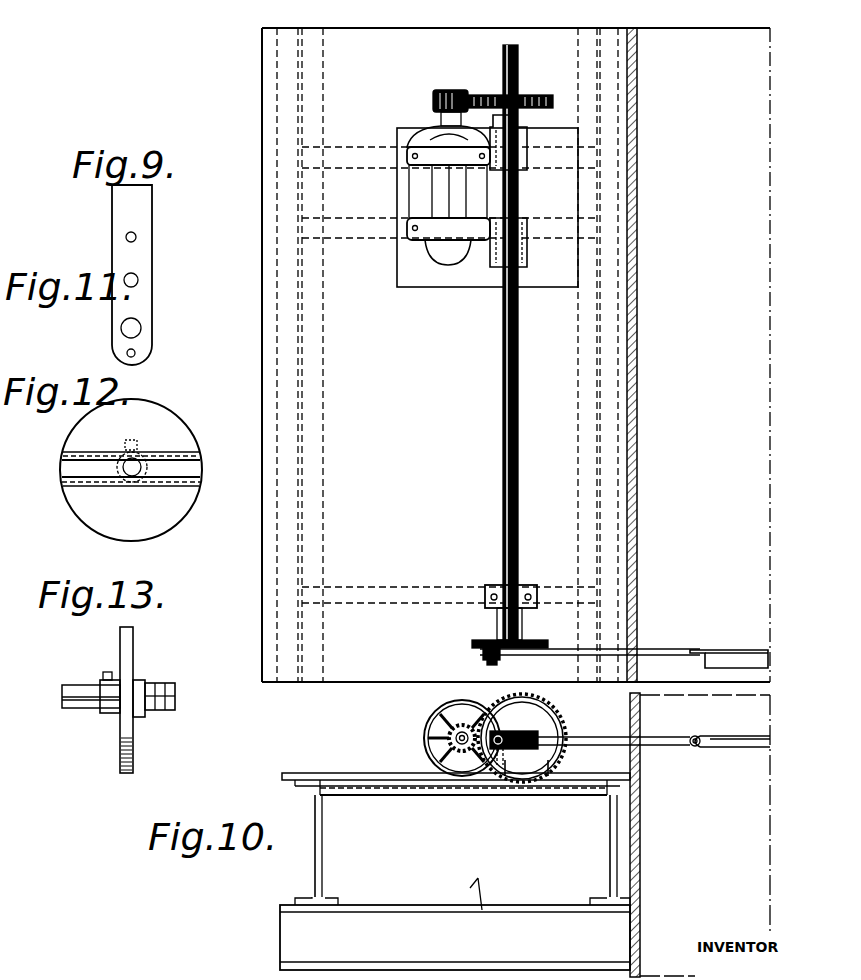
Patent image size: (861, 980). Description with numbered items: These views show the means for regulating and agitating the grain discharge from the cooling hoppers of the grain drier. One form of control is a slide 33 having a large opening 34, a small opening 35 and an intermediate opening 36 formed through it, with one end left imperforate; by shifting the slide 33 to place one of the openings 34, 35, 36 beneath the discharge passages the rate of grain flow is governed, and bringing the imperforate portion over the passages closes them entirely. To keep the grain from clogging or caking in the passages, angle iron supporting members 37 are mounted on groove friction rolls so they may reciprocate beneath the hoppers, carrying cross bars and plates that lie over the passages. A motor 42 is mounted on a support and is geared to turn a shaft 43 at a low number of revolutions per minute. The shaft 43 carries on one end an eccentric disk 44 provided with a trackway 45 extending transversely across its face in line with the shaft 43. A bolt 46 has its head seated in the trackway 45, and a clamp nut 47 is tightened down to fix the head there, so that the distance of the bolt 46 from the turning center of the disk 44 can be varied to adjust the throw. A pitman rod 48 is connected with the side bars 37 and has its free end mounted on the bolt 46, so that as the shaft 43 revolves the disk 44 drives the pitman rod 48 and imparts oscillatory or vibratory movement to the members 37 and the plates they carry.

In FIG. 11, the slide 33 is at (147, 302).
In FIG. 11, the large opening 34 is at (135, 331).
In FIG. 11, the small opening 35 is at (137, 237).
In FIG. 11, the intermediate opening 36 is at (139, 280).
In FIG. 9, the angle iron supporting members 37 is at (733, 652).
In FIG. 10, the angle iron supporting members 37 is at (718, 745).
In FIG. 9, the motor 42 is at (430, 228).
In FIG. 10, the motor 42 is at (437, 740).
In FIG. 9, the shaft 43 is at (503, 362).
In FIG. 13, the shaft 43 is at (72, 715).
In FIG. 10, the eccentric disk 44 is at (515, 766).
In FIG. 12, the eccentric disk 44 is at (80, 508).
In FIG. 10, the trackway 45 is at (540, 768).
In FIG. 12, the trackway 45 is at (200, 470).
In FIG. 13, the trackway 45 is at (136, 718).
In FIG. 10, the bolt 46 is at (486, 770).
In FIG. 13, the bolt 46 is at (176, 703).
In FIG. 13, the clamp nut 47 is at (170, 688).
In FIG. 9, the pitman rod 48 is at (651, 650).
In FIG. 10, the pitman rod 48 is at (666, 738).